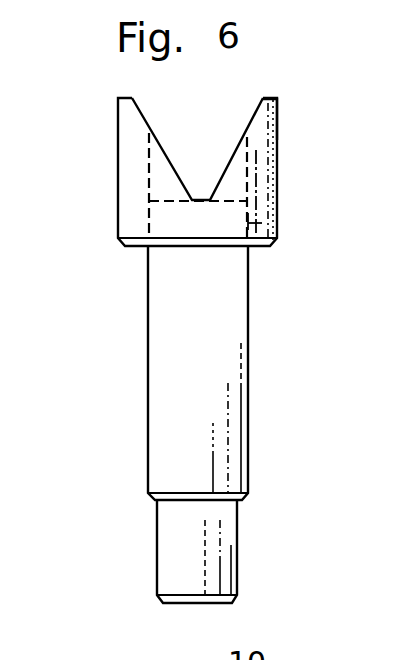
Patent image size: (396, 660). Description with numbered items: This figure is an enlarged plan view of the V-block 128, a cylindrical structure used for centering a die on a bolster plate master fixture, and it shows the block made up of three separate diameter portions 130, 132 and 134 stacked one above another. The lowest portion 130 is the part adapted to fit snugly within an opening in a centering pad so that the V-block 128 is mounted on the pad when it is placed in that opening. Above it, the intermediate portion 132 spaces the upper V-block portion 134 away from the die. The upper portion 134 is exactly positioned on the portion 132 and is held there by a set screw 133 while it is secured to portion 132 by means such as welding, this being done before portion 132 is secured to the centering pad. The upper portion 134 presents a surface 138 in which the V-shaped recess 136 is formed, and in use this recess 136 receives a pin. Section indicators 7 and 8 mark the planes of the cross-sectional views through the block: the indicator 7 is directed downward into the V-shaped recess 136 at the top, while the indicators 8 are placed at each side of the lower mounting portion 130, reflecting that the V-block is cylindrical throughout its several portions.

The section line 7- 7 is at (172, 72).
The section line 8- 8 is at (142, 538).
The V-block 128 is at (117, 177).
The first diameter portion 130 is at (197, 551).
The second diameter portion 132 is at (198, 373).
The set screw 133 is at (255, 212).
The third diameter portion 134 is at (198, 185).
The V-shaped recess 136 is at (166, 154).
The surface 138 is at (270, 98).